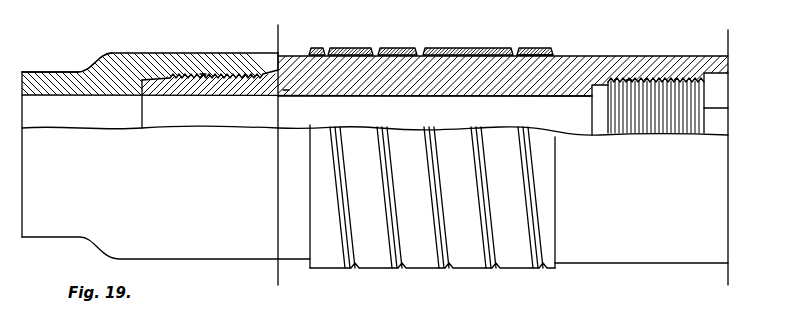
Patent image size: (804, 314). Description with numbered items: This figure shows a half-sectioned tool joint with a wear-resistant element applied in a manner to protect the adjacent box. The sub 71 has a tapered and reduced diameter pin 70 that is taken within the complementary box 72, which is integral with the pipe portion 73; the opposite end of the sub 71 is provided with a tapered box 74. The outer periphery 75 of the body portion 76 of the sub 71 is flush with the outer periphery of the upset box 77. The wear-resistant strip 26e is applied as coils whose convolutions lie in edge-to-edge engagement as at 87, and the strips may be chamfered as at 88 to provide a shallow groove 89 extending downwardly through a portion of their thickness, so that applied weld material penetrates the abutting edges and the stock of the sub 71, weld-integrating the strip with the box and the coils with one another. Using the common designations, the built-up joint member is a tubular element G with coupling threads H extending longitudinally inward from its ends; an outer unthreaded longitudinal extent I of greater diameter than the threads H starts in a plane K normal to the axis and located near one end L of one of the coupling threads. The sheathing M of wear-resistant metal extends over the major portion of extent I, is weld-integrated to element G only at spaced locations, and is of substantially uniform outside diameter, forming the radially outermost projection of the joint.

The pipe portion 73 is at (50, 72).
The upset box 77 is at (160, 53).
The complementary box 72 is at (187, 62).
The tapered and reduced diameter pin 70 is at (210, 92).
The outer periphery 75 is at (287, 54).
The wear-resistant strip 26e is at (338, 48).
The edge-to-edge engagement 87 is at (405, 50).
The chamfer 88 is at (469, 50).
The shallow groove 89 is at (516, 49).
The sub 71 is at (565, 65).
The body portion 76 is at (443, 82).
The tapered box 74 is at (660, 80).
The coupling threads H is at (202, 62).
The end of coupling thread L is at (255, 40).
The plane K is at (278, 28).
The tubular element G is at (288, 82).
The unthreaded longitudinal extent I is at (533, 50).
The sheathing M is at (369, 250).